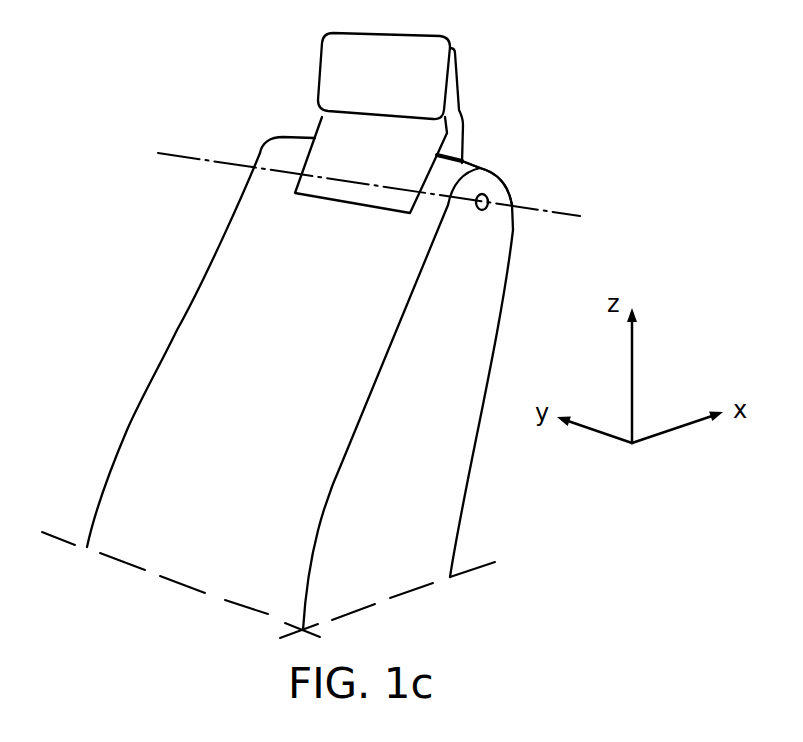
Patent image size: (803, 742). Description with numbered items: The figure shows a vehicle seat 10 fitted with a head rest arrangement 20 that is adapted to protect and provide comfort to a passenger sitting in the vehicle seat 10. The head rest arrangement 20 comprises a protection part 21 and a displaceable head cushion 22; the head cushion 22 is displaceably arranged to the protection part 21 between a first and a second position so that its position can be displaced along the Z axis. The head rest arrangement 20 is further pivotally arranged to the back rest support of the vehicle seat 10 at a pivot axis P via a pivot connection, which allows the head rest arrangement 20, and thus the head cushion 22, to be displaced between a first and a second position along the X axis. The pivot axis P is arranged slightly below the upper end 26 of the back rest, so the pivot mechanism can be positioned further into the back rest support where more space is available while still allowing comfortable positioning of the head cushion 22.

The vehicle seat 10 is at (124, 294).
The head rest arrangement 20 is at (418, 123).
The protection part 21 is at (455, 133).
The head cushion 22 is at (335, 53).
The upper end of the back rest 26 is at (485, 158).
The pivot axis P is at (186, 156).